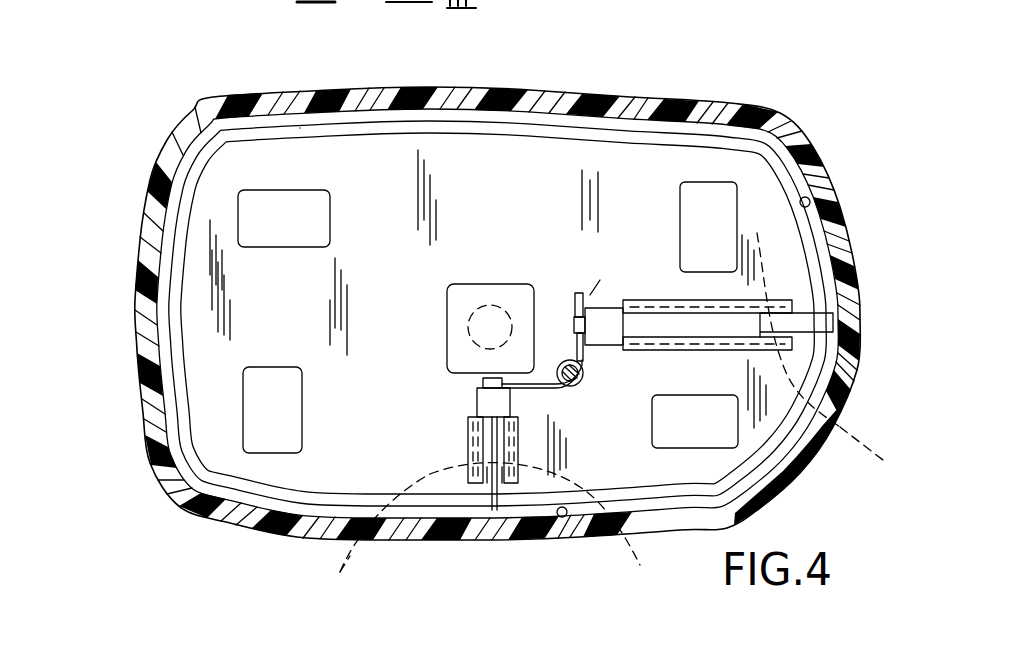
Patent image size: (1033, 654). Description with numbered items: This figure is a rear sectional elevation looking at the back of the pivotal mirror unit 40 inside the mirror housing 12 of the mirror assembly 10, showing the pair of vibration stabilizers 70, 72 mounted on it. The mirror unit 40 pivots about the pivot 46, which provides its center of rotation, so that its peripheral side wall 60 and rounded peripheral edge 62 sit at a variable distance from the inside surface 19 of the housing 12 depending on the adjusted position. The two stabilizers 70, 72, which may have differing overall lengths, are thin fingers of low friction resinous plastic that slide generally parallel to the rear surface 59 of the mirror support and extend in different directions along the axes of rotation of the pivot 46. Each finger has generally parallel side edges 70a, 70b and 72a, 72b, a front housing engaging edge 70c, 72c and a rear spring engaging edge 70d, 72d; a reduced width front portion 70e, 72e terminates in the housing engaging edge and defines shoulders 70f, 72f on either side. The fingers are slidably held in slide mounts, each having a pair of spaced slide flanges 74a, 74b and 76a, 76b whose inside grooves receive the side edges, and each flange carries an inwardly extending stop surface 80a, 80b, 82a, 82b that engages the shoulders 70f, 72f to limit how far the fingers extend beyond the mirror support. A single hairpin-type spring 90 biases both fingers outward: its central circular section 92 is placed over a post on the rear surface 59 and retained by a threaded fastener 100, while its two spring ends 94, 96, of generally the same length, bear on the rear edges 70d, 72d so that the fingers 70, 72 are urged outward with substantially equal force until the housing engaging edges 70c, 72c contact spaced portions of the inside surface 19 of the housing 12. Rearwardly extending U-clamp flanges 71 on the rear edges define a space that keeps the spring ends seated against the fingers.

The mirror assembly 10 is at (516, 270).
The mirror housing 12 is at (499, 281).
The inside surface of mirror housing 19 is at (811, 198).
The mirror unit 40 is at (643, 118).
The pivot 46 is at (449, 288).
The rear surface of rear wall 59 is at (488, 313).
The peripheral side wall 60 is at (498, 281).
The peripheral edge 62 is at (795, 162).
The vibration stabilizer 70 is at (652, 233).
The side edge 70a is at (619, 297).
The side edge 70b is at (695, 421).
The housing engaging edge 70c is at (836, 328).
The rear spring engaging edge 70d is at (605, 292).
The reduced width front portion 70e is at (836, 322).
The shoulder 70f is at (856, 268).
The U-clamp flange 71 is at (611, 297).
The vibration stabilizer 72 is at (496, 483).
The side edge 72a is at (545, 440).
The side edge 72b is at (476, 396).
The housing engaging edge 72c is at (495, 512).
The rear spring engaging edge 72d is at (482, 380).
The reduced width front portion 72e is at (489, 485).
The shoulder 72f is at (488, 485).
The slide flange 74a is at (695, 299).
The slide flange 74b is at (677, 351).
The slide flange 76a is at (520, 440).
The slide flange 76b is at (467, 440).
The stop surface 80a is at (790, 316).
The stop surface 80b is at (886, 451).
The stop surface 82a is at (516, 528).
The stop surface 82b is at (320, 577).
The hairpin-type spring 90 is at (590, 387).
The central circular section 92 is at (465, 328).
The spring end 94 is at (575, 292).
The spring end 96 is at (560, 392).
The threaded fastener 100 is at (584, 376).